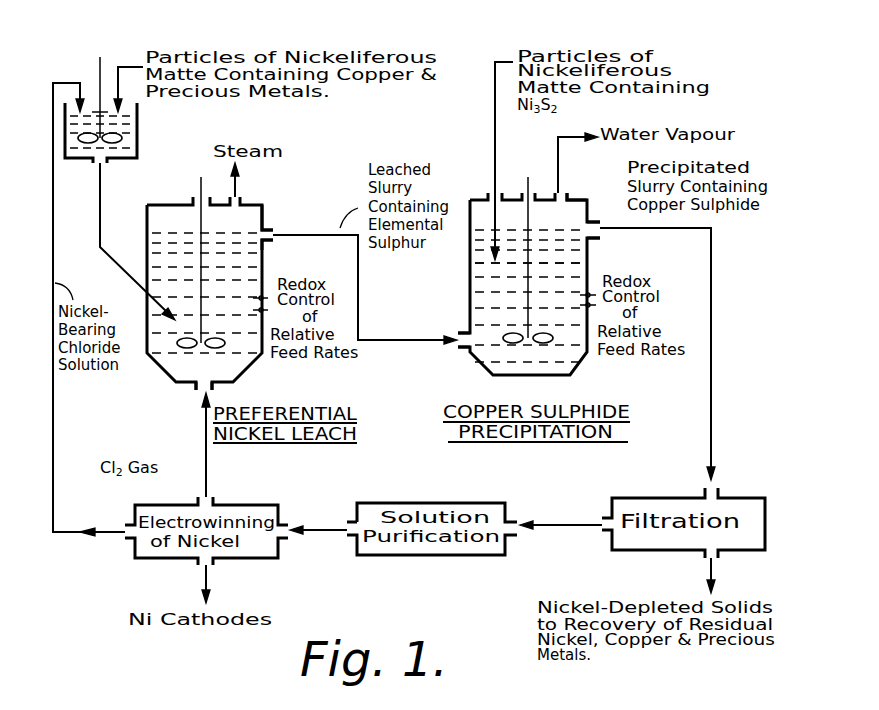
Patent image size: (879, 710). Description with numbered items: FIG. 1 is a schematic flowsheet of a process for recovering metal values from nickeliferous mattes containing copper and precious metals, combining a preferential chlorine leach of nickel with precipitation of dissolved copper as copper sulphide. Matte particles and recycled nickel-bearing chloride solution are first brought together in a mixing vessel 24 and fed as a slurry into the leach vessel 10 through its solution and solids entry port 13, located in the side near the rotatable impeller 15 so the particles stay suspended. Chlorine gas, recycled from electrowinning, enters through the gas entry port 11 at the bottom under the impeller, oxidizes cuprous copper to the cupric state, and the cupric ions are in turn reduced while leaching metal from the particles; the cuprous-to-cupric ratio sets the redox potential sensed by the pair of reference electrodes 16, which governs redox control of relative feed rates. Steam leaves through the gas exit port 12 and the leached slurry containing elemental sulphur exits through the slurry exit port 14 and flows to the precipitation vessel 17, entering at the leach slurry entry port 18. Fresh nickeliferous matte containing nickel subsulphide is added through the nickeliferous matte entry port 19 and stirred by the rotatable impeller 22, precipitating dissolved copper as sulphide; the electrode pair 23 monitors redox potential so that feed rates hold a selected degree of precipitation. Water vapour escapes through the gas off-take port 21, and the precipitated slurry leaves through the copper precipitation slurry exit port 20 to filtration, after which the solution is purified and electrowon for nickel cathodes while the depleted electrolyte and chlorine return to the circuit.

The vessel 10 is at (147, 232).
The gas entry port 11 is at (196, 388).
The gas exit port 12 is at (240, 197).
The solution and solids entry port 13 is at (142, 293).
The slurry exit port 14 is at (264, 229).
The rotatable impeller 15 is at (203, 261).
The pair of reference electrodes 16 is at (255, 303).
The vessel 17 is at (470, 296).
The leach slurry entry port 18 is at (470, 348).
The nickeliferous matte entry port 19 is at (510, 196).
The copper precipitation slurry exit port 20 is at (598, 228).
The gas off-take port 21 is at (568, 194).
The rotatable impeller 22 is at (522, 267).
The electrode pair 23 is at (593, 295).
The mixing vessel 24 is at (137, 150).